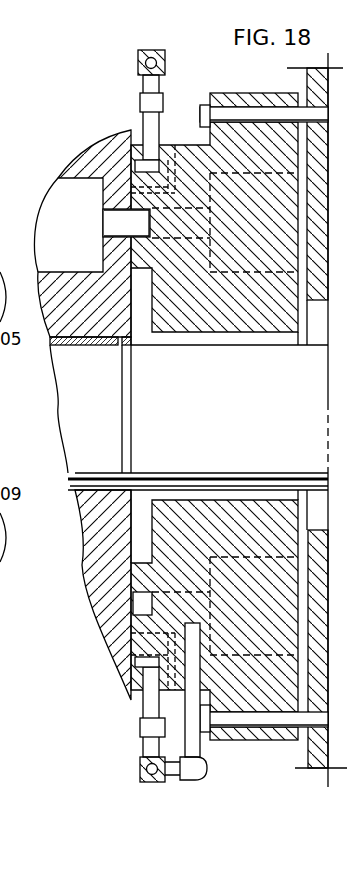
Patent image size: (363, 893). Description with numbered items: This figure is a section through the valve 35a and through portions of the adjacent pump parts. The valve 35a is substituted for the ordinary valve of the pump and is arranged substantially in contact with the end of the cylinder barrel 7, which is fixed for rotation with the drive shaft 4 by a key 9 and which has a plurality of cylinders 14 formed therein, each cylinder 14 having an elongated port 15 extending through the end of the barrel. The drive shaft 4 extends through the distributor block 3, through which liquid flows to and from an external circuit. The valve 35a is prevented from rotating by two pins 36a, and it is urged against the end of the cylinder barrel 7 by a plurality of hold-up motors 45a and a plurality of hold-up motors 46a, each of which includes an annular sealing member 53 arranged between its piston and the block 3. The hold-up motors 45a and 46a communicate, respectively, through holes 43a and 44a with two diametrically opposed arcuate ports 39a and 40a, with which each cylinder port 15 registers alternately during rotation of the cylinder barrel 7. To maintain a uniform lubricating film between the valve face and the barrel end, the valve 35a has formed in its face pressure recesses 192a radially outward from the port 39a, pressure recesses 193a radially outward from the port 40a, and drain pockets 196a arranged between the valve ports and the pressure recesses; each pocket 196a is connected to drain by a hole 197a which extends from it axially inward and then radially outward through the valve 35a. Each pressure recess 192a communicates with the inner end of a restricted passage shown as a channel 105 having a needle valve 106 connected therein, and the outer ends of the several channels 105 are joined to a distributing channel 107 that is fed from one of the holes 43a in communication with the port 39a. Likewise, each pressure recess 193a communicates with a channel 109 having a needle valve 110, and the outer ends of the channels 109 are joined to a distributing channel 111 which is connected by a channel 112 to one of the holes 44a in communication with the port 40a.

The distributor block 3 is at (322, 275).
The drive shaft 4 is at (320, 437).
The cylinder barrel 7 is at (95, 549).
The key 9 is at (48, 341).
The cylinder 14 is at (45, 224).
The port 15 is at (108, 217).
The valve 35a is at (185, 318).
The pin 36a is at (320, 116).
The arcuate port 39a is at (138, 225).
The arcuate port 40a is at (140, 602).
The hole 43a is at (164, 246).
The hole 44a is at (177, 584).
The hold-up motor 45a is at (279, 170).
The hold-up motor 46a is at (279, 658).
The annular sealing member 53 is at (303, 212).
The channel 105 is at (148, 83).
The needle valve 106 is at (140, 100).
The distributing channel 107 is at (138, 53).
The channel 109 is at (150, 751).
The needle valve 110 is at (145, 731).
The distributing channel 111 is at (140, 778).
The channel 112 is at (201, 750).
The pressure recess 192a is at (132, 163).
The pressure recess 193a is at (137, 665).
The drain pocket 196a is at (124, 186).
The hole 197a is at (174, 137).